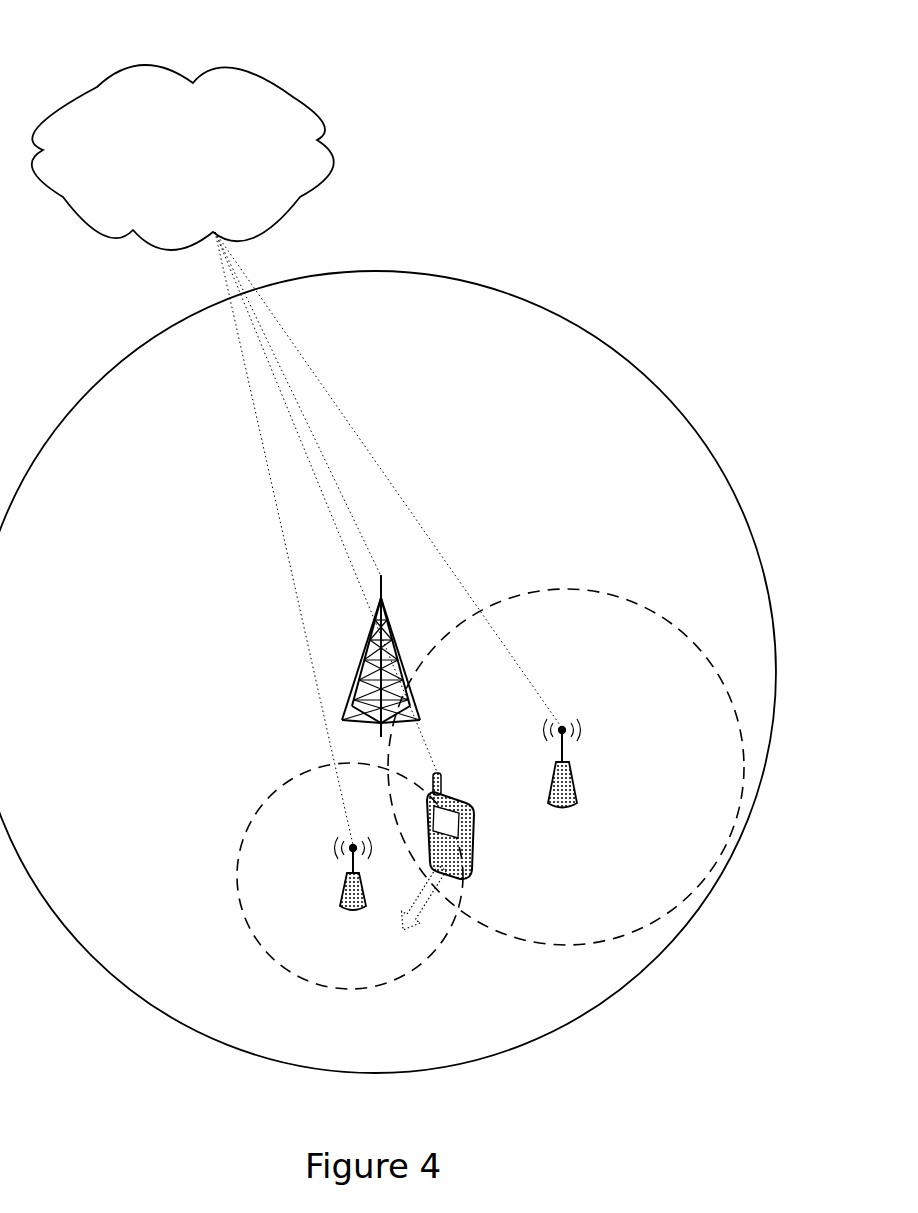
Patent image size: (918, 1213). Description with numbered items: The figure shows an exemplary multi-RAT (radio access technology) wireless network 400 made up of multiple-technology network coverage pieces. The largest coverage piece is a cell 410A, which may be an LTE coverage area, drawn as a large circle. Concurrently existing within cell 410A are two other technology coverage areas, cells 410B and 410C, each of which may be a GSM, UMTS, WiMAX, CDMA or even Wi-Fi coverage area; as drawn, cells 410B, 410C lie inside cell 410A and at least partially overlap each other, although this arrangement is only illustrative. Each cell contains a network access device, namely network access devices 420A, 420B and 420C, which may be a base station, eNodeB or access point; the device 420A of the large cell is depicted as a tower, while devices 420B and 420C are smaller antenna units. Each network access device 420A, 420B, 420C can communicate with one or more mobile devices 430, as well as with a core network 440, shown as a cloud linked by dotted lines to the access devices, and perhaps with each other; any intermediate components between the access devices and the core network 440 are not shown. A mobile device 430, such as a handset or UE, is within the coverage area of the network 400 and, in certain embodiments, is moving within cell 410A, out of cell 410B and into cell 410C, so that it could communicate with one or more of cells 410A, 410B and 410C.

The multi-RAT wireless network 400 is at (685, 93).
The cell 410A is at (396, 313).
The cell 410B is at (592, 633).
The cell 410C is at (376, 985).
The network access device 420A is at (507, 504).
The network access device 420B is at (668, 601).
The network access device 420C is at (239, 960).
The mobile device 430 is at (516, 929).
The core network 440 is at (199, 167).